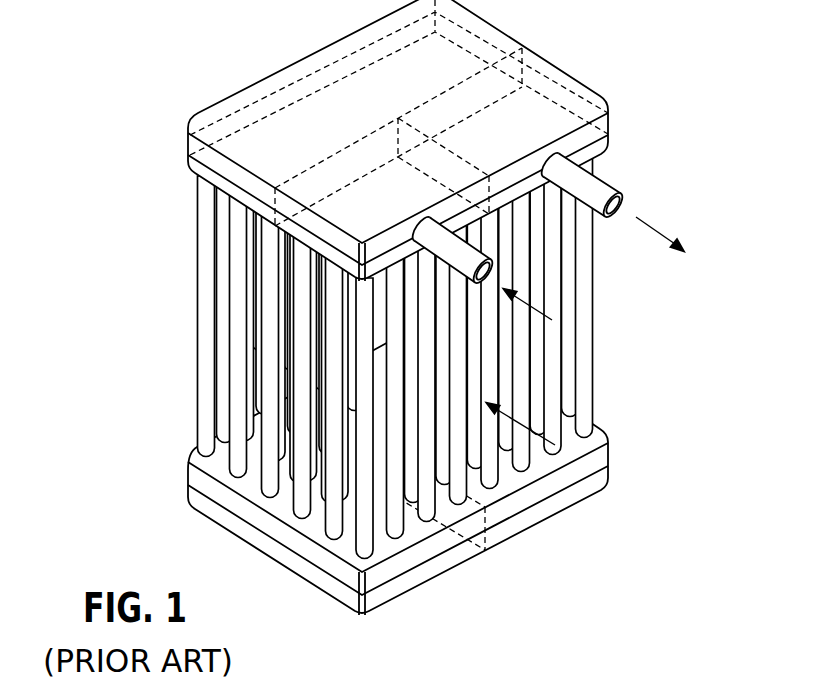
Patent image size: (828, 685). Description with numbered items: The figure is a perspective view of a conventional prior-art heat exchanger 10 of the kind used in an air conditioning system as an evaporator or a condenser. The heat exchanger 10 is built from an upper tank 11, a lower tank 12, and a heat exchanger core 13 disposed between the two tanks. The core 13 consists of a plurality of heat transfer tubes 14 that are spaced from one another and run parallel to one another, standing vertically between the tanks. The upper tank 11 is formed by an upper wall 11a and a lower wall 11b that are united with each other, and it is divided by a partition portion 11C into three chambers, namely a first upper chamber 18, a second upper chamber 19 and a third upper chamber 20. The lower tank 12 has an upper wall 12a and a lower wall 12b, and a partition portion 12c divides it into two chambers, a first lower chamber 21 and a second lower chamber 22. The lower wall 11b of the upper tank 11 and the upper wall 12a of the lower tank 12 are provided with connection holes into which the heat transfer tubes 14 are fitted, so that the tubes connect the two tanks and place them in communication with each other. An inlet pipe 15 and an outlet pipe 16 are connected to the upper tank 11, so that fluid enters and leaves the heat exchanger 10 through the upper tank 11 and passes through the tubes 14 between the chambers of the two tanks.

The heat exchanger 10 is at (178, 377).
The upper tank 11 is at (444, 140).
The upper wall 11a is at (612, 109).
The lower wall 11b is at (612, 138).
The partition portion 11C is at (398, 140).
The lower tank 12 is at (449, 471).
The upper wall 12a is at (611, 444).
The lower tank body 12b is at (611, 471).
The partition portion 12c is at (437, 480).
The heat exchanger core 13 is at (443, 351).
The heat transfer tubes 14 is at (592, 296).
The inlet pipe 15 is at (482, 254).
The outlet pipe 16 is at (613, 174).
The first upper chamber 18 is at (401, 213).
The second upper chamber 19 is at (336, 146).
The third upper chamber 20 is at (514, 153).
The first lower chamber 21 is at (311, 553).
The second lower chamber 22 is at (579, 474).